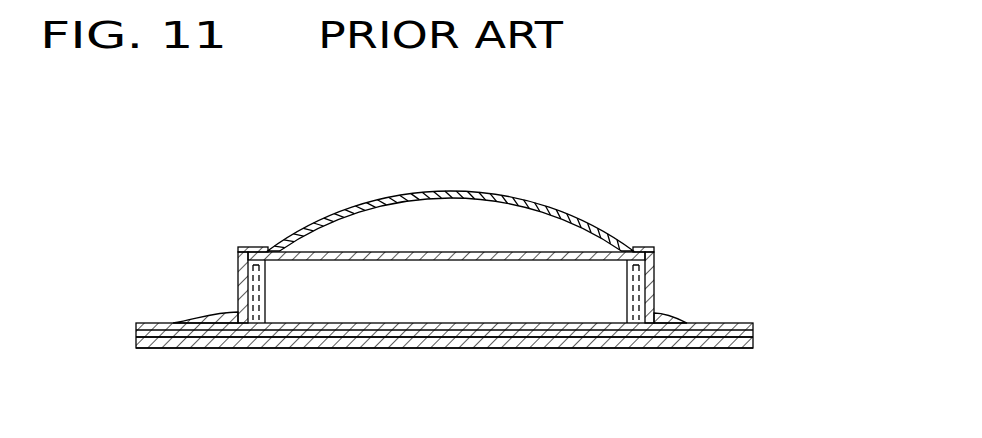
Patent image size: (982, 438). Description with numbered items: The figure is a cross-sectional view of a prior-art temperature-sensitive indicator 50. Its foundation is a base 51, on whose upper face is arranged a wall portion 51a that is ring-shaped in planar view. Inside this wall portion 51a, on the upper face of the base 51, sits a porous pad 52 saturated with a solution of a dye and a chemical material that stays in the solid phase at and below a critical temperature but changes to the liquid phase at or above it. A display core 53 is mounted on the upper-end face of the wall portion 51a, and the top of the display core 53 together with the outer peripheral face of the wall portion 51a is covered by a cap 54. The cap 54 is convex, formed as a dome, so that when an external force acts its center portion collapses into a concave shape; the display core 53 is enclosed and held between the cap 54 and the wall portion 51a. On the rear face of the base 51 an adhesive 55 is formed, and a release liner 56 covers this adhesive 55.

The prior art package 50 is at (812, 270).
The base 51 is at (753, 332).
The wall portion 51a is at (265, 302).
The porous pad 52 is at (419, 322).
The display core 53 is at (472, 223).
The cap 54 is at (452, 191).
The adhesive 55 is at (753, 336).
The release liner 56 is at (615, 348).